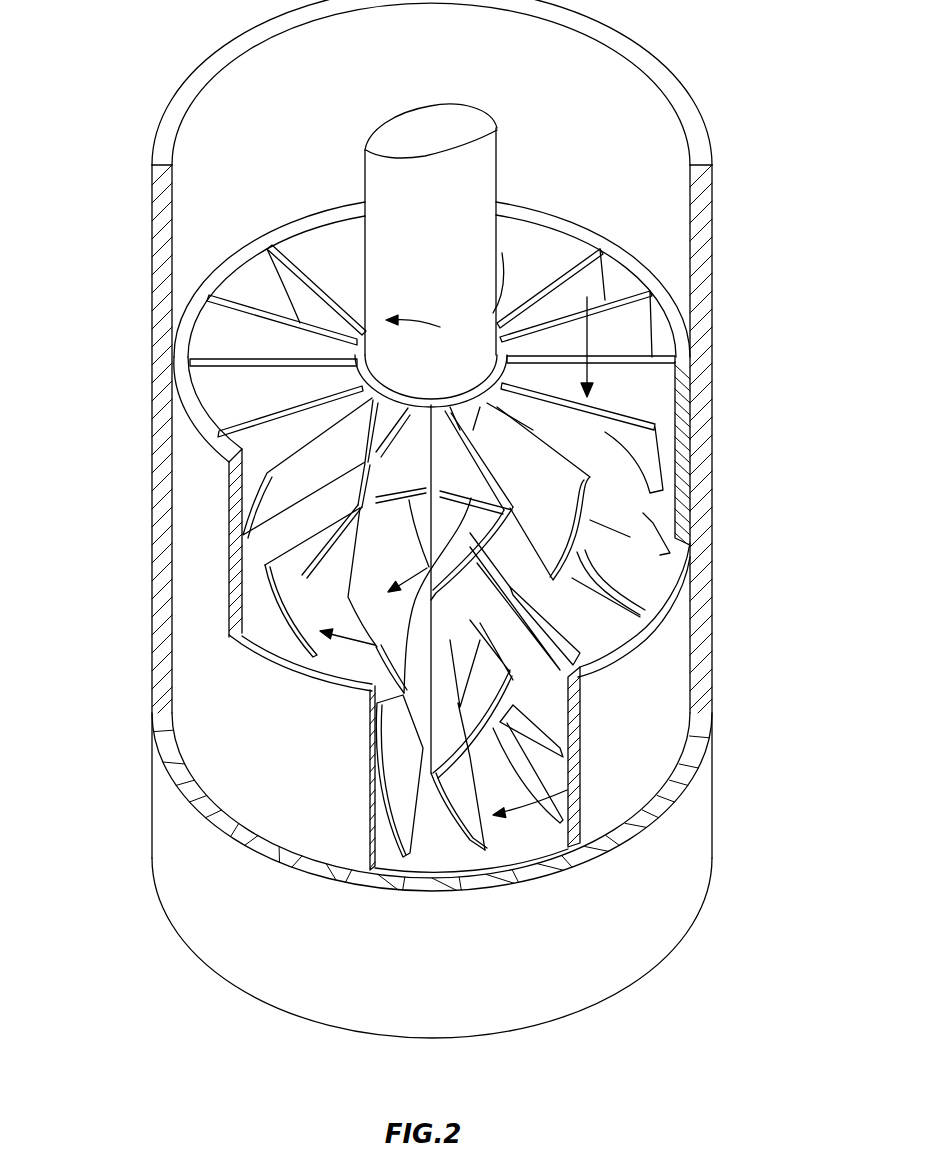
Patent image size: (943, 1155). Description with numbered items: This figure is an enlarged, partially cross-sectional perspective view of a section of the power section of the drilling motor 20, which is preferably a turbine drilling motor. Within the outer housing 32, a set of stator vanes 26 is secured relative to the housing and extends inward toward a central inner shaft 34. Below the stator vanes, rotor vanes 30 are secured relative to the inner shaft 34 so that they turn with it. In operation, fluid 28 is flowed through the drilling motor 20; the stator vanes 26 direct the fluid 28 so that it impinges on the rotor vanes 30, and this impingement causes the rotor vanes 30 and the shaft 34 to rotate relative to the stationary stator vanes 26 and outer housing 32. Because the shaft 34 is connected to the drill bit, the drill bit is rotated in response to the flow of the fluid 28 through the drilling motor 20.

The drilling motor 20 is at (733, 102).
The stator vanes 26 is at (223, 360).
The fluid 28 is at (471, 498).
The rotor vanes 30 is at (580, 577).
The outer housing 32 is at (150, 790).
The inner shaft 34 is at (498, 165).